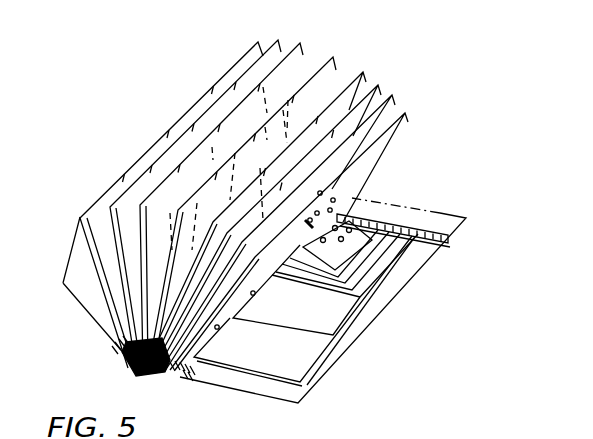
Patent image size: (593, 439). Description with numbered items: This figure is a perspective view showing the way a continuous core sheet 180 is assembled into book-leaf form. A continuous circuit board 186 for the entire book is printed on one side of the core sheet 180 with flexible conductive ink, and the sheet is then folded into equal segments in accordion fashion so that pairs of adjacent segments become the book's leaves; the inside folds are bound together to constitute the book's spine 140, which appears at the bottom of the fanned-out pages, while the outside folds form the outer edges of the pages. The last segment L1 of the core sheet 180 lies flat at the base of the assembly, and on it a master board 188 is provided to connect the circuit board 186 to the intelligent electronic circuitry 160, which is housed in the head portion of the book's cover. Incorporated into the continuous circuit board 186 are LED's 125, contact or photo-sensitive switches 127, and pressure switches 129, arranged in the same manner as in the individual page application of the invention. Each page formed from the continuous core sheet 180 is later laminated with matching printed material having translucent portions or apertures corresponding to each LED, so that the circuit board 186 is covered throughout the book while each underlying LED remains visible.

The continuous core sheet 180 is at (461, 105).
The spine 140 is at (155, 373).
The last segment L1 is at (343, 347).
The LED's 125 is at (217, 327).
The continuous circuit board 186 is at (402, 270).
The pressure switches 129 is at (253, 293).
The master board 188 is at (410, 215).
The intelligent electronic circuitry 160 is at (448, 220).
The contact or photo-sensitive switches 127 is at (322, 207).